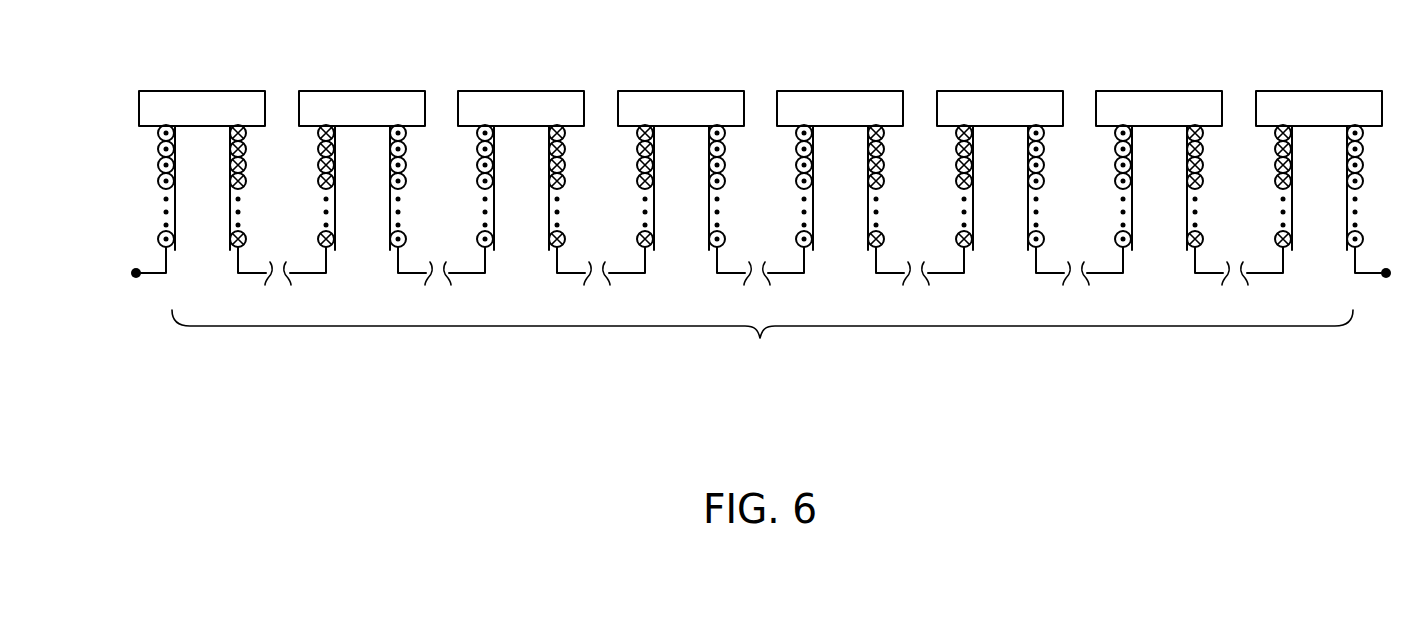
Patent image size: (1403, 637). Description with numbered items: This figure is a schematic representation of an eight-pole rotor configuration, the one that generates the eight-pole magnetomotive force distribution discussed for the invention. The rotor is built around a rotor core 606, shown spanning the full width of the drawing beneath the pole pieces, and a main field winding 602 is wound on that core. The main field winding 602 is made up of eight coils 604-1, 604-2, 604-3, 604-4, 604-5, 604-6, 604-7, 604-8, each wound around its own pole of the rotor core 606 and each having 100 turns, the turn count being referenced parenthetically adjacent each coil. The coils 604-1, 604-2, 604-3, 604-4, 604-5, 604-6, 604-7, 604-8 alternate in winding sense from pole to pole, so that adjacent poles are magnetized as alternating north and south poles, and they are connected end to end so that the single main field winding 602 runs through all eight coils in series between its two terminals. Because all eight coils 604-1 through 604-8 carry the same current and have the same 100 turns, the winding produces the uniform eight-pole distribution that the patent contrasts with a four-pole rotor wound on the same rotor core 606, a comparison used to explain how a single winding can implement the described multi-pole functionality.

The coil 604-1 is at (152, 247).
The coil 604-2 is at (337, 160).
The coil 604-3 is at (496, 160).
The coil 604-4 is at (656, 160).
The coil 604-5 is at (815, 160).
The coil 604-6 is at (975, 160).
The coil 604-7 is at (1134, 160).
The coil 604-8 is at (1298, 163).
The turns 100 is at (760, 186).
The main field winding 602 is at (140, 276).
The rotor core 606 is at (733, 371).